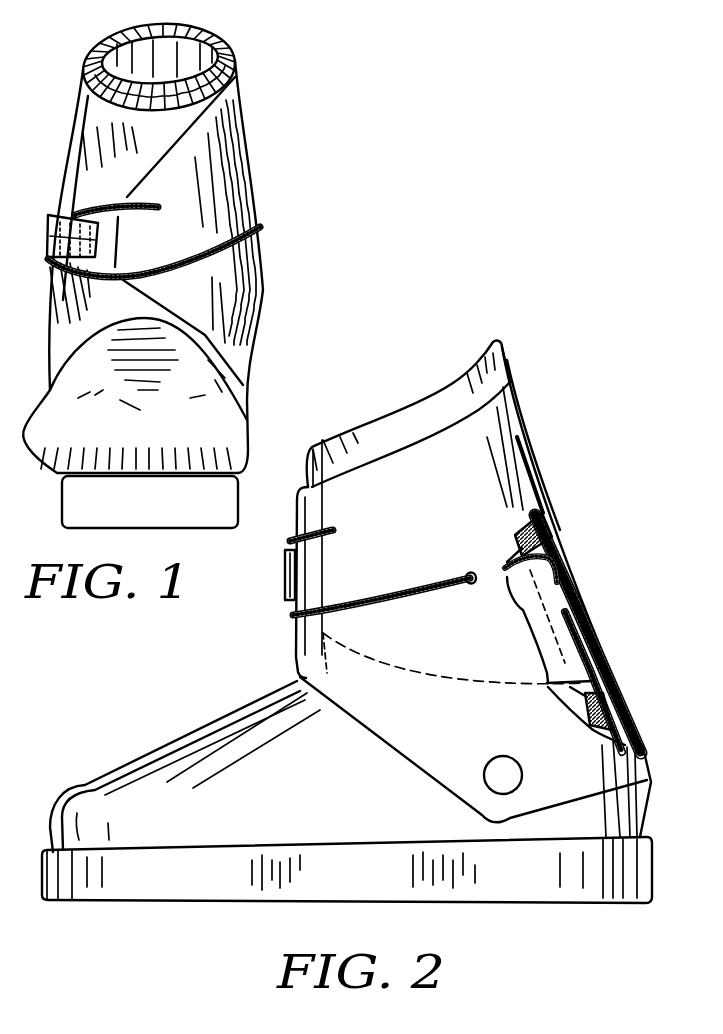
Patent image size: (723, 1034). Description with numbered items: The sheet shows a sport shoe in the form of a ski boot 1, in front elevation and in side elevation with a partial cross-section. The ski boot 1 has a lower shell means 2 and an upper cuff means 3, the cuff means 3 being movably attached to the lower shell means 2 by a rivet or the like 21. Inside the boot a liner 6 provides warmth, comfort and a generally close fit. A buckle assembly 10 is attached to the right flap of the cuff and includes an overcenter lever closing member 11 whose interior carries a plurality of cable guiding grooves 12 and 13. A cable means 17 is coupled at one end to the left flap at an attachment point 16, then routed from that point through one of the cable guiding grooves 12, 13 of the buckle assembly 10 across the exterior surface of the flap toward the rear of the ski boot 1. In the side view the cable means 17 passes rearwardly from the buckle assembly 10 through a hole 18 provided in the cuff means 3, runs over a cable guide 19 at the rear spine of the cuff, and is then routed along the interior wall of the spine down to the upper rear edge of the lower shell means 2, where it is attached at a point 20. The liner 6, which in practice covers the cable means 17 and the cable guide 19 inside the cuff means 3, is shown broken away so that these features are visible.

In FIG. 1, the ski boot 1 is at (265, 209).
In FIG. 1, the lower shell means 2 is at (86, 421).
In FIG. 2, the lower shell means 2 is at (162, 738).
In FIG. 1, the upper cuff means 3 is at (245, 157).
In FIG. 1, the liner 6 is at (240, 50).
In FIG. 1, the buckle assembly 10 is at (135, 229).
In FIG. 1, the overcenter lever closing member 11 is at (50, 263).
In FIG. 1, the cable guiding groove 12 is at (50, 250).
In FIG. 1, the cable guiding groove 13 is at (48, 225).
In FIG. 1, the cuff means attachment point 16 is at (157, 208).
In FIG. 2, the cuff means attachment point 16 is at (335, 533).
In FIG. 1, the cable means 17 is at (185, 277).
In FIG. 2, the cable means 17 is at (407, 600).
In FIG. 2, the hole 18 is at (470, 573).
In FIG. 2, the cable guide 19 is at (518, 601).
In FIG. 2, the attachment point 20 is at (607, 673).
In FIG. 2, the rivet 21 is at (510, 773).